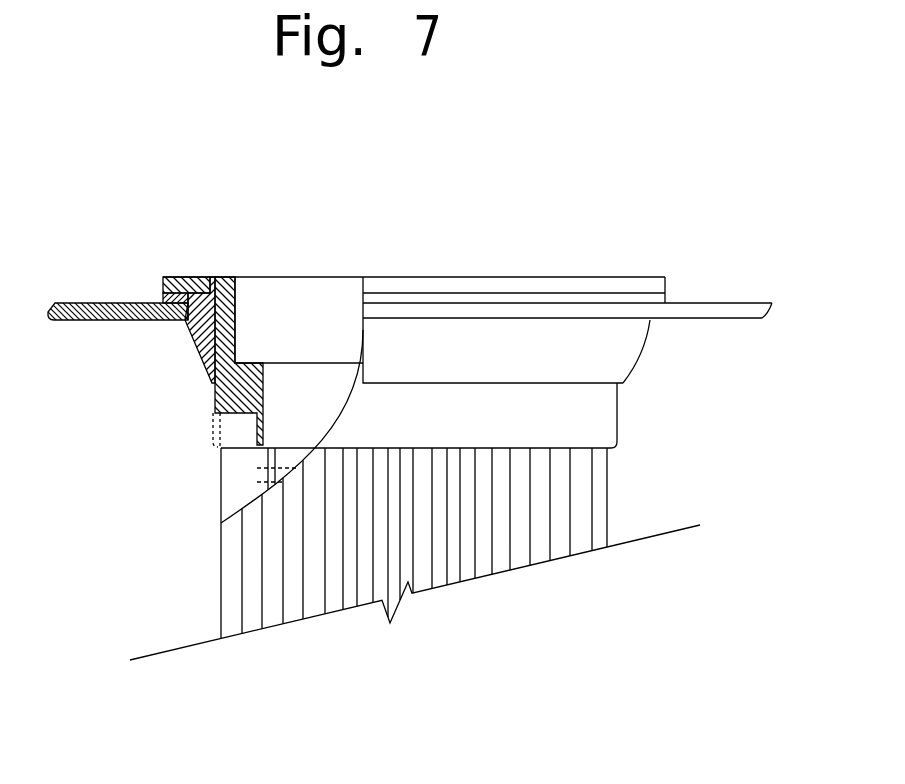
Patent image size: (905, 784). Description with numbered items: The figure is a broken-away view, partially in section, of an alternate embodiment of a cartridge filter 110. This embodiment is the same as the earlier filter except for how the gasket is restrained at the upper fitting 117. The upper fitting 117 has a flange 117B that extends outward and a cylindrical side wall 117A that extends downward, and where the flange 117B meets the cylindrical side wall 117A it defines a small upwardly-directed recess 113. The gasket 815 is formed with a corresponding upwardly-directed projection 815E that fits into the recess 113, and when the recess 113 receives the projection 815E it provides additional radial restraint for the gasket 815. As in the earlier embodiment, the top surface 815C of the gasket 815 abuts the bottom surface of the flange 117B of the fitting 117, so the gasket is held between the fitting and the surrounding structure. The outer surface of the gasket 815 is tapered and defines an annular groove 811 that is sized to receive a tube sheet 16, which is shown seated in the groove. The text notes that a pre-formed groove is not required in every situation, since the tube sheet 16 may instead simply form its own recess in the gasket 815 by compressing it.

The cartridge filter 110 is at (677, 215).
The recess 113 is at (235, 322).
The upper fitting 117 is at (465, 282).
The cylindrical side wall 117A is at (215, 412).
The flange 117B is at (163, 287).
The tube sheet 16 is at (97, 303).
The annular groove 811 is at (182, 322).
The gasket 815 is at (205, 348).
The top surface 815C is at (167, 280).
The projection 815E is at (207, 293).